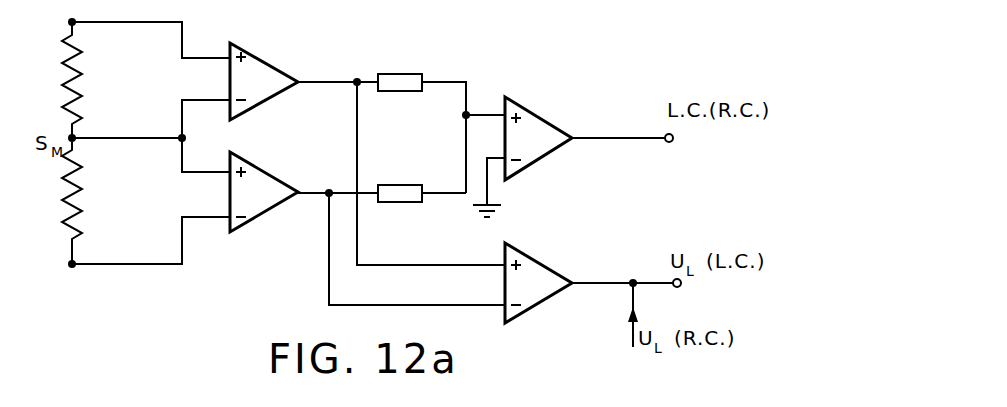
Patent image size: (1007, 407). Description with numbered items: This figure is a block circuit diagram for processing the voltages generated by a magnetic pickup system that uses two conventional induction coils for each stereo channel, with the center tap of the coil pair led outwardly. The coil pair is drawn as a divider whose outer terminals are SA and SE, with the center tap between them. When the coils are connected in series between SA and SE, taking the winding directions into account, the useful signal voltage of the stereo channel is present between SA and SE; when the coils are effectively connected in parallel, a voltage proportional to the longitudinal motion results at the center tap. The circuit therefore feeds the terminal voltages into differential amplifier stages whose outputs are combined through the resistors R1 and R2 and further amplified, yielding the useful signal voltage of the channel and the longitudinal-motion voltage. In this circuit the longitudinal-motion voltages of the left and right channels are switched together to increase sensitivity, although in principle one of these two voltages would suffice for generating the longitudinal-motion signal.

The resistor R1 is at (400, 67).
The resistor R2 is at (400, 177).
The coil terminal SA is at (58, 72).
The coil terminal SE is at (58, 212).